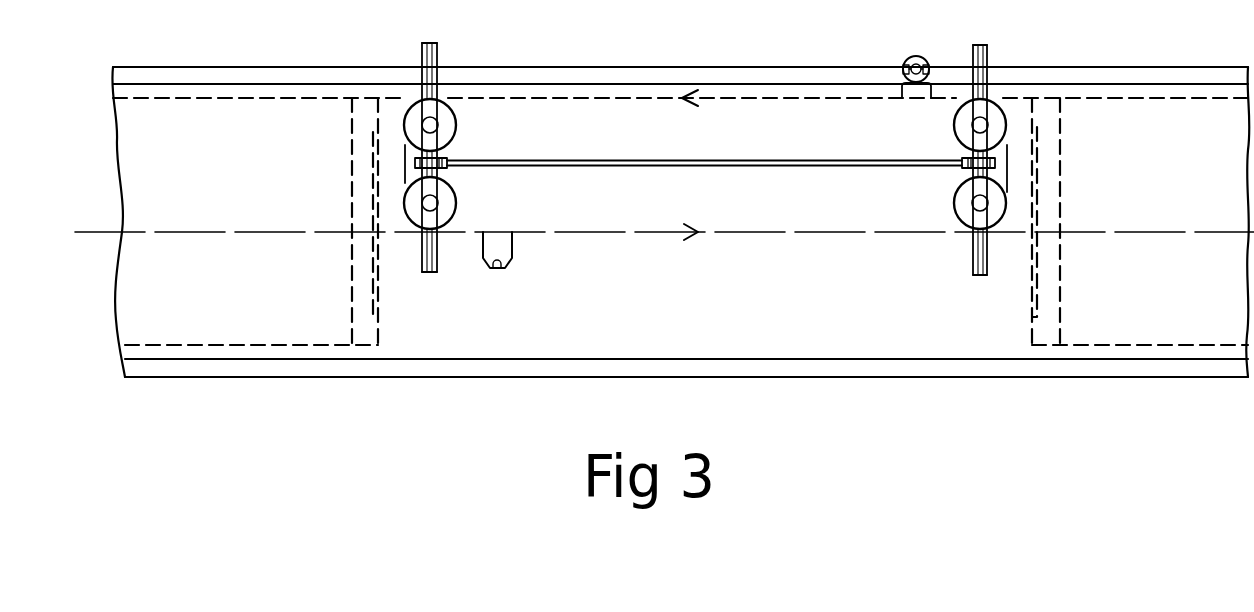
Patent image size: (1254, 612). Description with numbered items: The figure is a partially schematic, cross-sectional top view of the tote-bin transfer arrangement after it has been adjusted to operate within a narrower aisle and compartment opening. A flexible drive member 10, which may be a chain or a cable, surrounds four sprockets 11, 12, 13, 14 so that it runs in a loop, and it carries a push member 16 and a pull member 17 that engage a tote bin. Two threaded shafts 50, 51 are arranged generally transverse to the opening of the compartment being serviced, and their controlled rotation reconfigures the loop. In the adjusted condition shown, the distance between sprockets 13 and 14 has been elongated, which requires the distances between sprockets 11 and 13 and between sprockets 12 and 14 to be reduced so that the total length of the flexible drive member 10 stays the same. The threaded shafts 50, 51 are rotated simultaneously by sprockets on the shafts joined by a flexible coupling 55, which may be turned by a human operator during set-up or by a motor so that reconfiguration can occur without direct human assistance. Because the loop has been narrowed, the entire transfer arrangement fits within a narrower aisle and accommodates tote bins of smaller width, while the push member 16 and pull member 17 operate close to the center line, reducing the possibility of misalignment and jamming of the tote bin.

The flexible drive member 10 is at (600, 97).
The sprocket 11 is at (956, 212).
The sprocket 12 is at (958, 112).
The sprocket 13 is at (452, 210).
The sprocket 14 is at (450, 135).
The push member 16 is at (912, 57).
The pull member 17 is at (512, 248).
The threaded shaft 50 is at (437, 262).
The threaded shaft 51 is at (973, 262).
The flexible coupling 55 is at (760, 167).